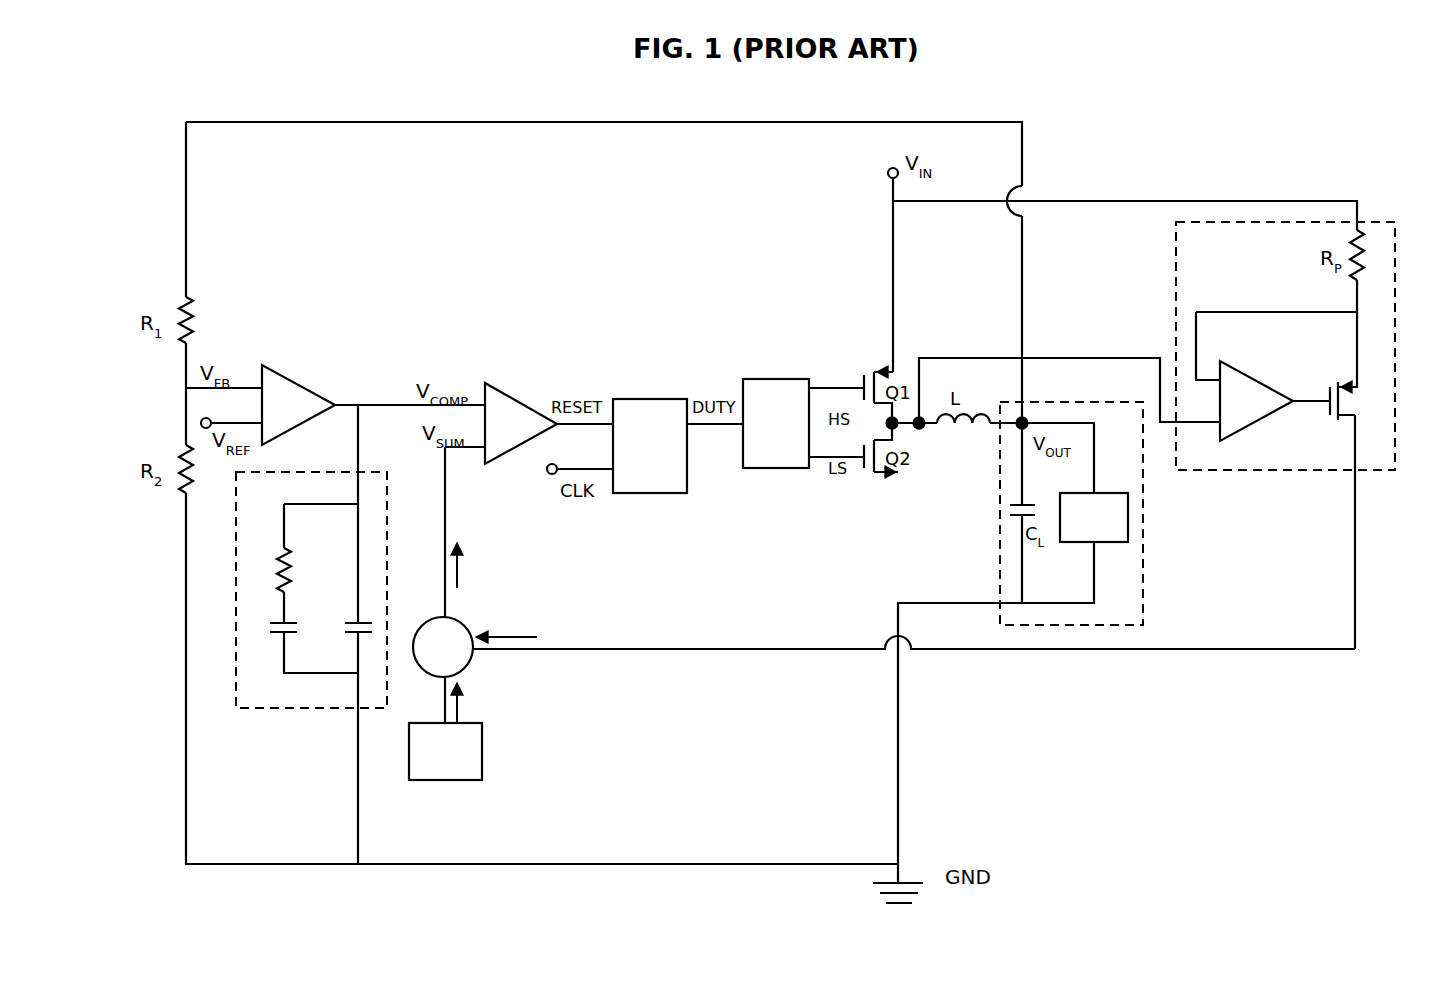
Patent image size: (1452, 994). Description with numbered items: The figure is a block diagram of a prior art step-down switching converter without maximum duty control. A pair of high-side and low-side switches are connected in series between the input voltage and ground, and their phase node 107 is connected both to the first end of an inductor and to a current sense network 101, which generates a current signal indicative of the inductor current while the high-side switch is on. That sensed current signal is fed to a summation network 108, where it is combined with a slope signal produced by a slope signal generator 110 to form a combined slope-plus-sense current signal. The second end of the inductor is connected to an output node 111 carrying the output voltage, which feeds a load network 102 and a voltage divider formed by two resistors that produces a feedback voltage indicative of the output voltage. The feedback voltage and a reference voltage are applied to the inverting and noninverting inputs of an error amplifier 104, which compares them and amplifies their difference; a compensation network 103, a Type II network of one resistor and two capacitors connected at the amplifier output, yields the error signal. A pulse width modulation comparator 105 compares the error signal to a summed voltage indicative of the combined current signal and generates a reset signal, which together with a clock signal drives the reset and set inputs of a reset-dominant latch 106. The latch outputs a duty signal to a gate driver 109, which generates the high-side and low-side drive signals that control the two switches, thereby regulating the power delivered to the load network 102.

The current sense network 101 is at (1372, 222).
The load network 102 is at (1143, 576).
The compensation network 103 is at (252, 708).
The error amplifier 104 is at (298, 380).
The pulse width modulation comparator 105 is at (502, 397).
The reset-dominant latch 106 is at (642, 399).
The phase node 107 is at (885, 418).
The summation network 108 is at (470, 660).
The gate driver 109 is at (758, 379).
The slope signal generator 110 is at (482, 752).
The output node 111 is at (1028, 418).